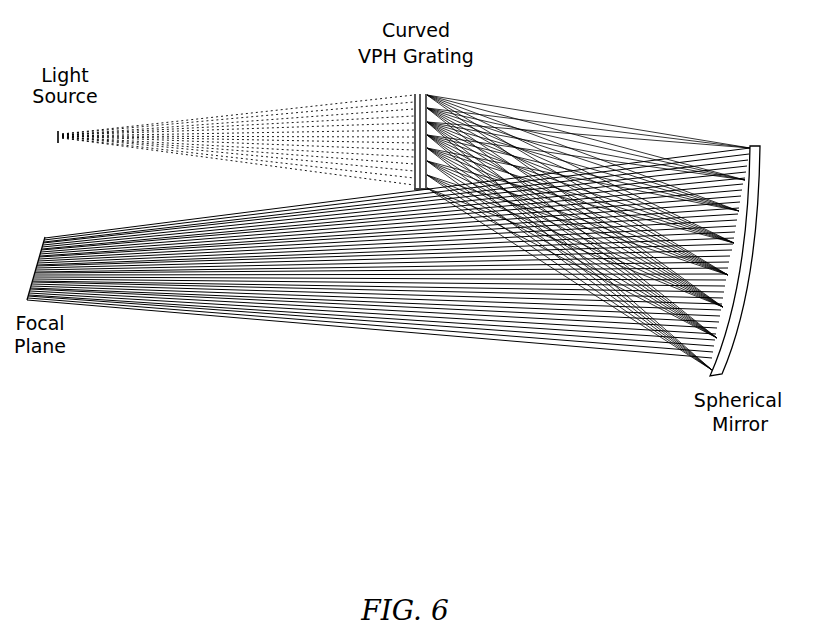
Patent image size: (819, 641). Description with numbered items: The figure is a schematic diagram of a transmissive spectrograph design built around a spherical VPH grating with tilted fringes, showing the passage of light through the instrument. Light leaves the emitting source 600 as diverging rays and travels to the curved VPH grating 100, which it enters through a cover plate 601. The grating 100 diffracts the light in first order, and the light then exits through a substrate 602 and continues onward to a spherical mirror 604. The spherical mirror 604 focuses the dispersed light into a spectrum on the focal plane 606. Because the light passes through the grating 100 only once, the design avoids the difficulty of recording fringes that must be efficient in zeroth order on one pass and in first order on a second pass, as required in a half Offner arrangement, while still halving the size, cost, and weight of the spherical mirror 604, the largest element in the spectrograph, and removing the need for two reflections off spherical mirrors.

The emitting source 600 is at (56, 138).
The cover plate 601 is at (415, 98).
The curved VPH grating 100 is at (420, 95).
The substrate 602 is at (427, 95).
The spherical mirror 604 is at (757, 180).
The focal plane 606 is at (33, 284).